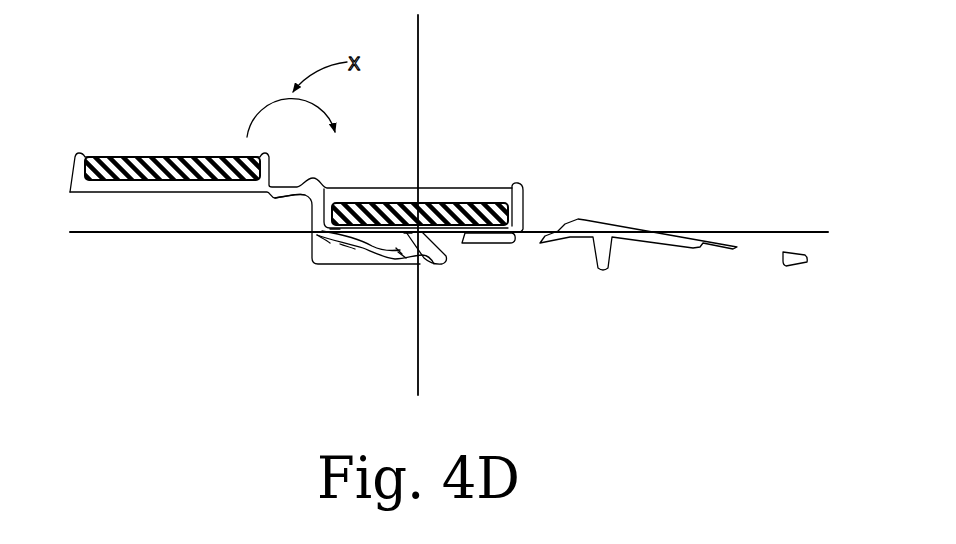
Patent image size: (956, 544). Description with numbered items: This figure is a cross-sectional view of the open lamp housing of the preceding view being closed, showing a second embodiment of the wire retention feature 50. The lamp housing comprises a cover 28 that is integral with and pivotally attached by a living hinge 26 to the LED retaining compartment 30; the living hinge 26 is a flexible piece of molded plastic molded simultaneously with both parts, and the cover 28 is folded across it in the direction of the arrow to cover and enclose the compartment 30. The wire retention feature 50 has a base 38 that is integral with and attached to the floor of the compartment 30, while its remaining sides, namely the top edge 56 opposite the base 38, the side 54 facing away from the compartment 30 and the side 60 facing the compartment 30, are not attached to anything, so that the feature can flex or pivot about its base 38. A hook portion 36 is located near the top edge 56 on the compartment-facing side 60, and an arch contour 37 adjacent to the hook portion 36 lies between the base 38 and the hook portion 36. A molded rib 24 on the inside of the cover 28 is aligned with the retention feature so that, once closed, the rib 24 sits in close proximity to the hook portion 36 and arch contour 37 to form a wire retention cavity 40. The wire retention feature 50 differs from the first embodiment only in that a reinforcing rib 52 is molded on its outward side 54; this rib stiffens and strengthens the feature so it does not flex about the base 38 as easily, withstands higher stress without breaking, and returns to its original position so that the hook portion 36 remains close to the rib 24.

The rib 24 is at (135, 152).
The living hinge 26 is at (275, 203).
The cover 28 is at (160, 188).
The LED retaining compartment 30 is at (510, 243).
The hook portion 36 is at (408, 236).
The arch contour 37 is at (390, 258).
The base 38 is at (322, 243).
The wire retention cavity 40 is at (403, 257).
The wire retention feature 50 is at (347, 277).
The reinforcing rib 52 is at (329, 263).
The side 54 is at (335, 233).
The top edge 56 is at (431, 266).
The side 60 is at (398, 250).